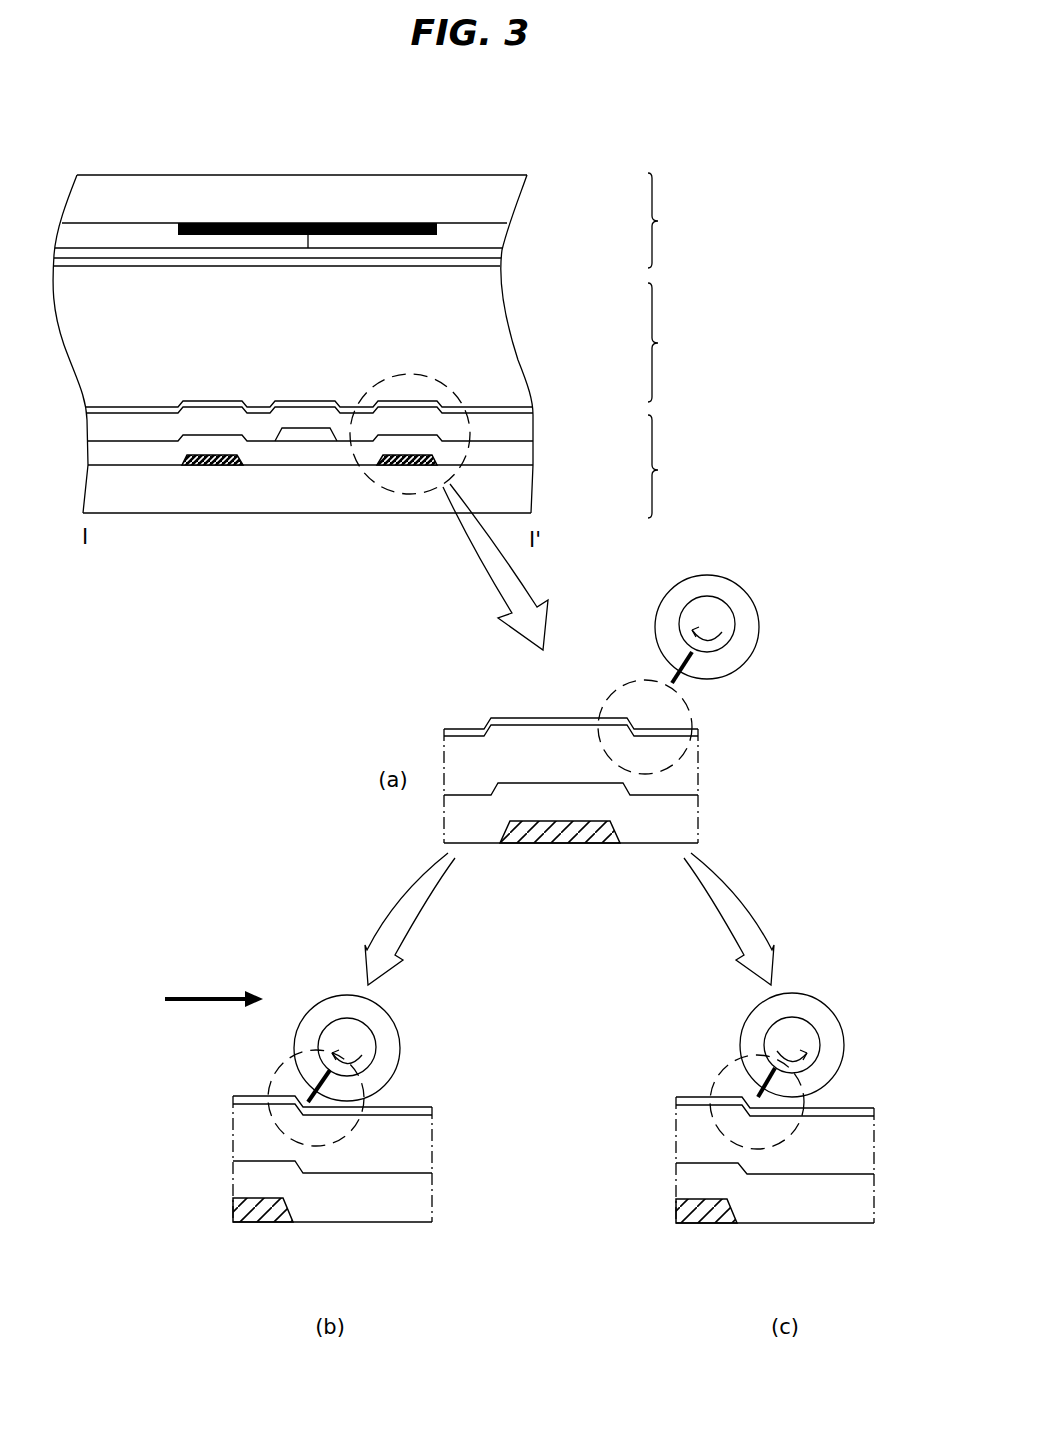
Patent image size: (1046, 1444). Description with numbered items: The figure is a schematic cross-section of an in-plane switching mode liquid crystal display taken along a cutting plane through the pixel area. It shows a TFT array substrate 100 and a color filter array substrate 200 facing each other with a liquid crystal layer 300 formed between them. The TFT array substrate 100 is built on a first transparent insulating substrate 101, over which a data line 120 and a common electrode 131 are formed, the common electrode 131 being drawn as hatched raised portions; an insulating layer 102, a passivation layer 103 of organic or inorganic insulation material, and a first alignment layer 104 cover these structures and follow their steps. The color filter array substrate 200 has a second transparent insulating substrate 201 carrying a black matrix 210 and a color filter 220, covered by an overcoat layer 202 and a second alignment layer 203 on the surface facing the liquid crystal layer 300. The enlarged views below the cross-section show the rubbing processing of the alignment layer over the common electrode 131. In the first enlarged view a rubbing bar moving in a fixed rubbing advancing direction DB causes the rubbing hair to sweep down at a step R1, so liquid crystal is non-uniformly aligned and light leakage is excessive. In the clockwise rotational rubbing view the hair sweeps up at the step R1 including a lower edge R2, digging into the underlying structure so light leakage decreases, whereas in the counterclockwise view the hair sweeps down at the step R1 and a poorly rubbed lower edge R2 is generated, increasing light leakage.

The TFT array substrate 100 is at (677, 466).
The first transparent insulating substrate 101 is at (527, 490).
The gate insulating layer 102 is at (527, 456).
The passivation layer 103 is at (527, 431).
The first alignment layer 104 is at (160, 405).
The data line 120 is at (305, 428).
The common electrode 131 is at (212, 467).
The color filter array substrate 200 is at (677, 220).
The second transparent insulating substrate 201 is at (510, 197).
The overcoat layer 202 is at (502, 257).
The second alignment layer 203 is at (353, 266).
The black matrix 210 is at (270, 223).
The color filter 220 is at (473, 233).
The liquid crystal layer 300 is at (677, 342).
The step R1 is at (692, 712).
The lower edge R2 is at (637, 725).
The rubbing advancing direction DB is at (214, 985).